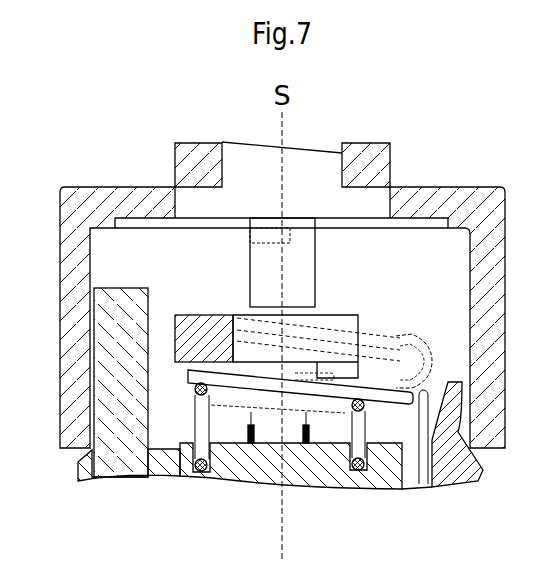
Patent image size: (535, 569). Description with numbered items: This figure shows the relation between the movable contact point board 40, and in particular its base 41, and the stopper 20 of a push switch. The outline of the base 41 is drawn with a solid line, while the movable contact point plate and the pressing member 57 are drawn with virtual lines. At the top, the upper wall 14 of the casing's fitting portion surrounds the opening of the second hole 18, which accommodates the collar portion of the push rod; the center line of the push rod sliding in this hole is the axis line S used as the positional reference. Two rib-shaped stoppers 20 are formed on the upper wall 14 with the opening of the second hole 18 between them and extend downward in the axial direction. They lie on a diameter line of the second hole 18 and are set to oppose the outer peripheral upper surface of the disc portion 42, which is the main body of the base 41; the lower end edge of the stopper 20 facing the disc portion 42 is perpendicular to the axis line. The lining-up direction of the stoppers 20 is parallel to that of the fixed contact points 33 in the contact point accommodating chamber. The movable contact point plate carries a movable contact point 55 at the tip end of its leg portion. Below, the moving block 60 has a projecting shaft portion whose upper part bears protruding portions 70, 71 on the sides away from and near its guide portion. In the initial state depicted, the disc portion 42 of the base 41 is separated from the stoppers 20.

The upper wall 14 is at (433, 197).
The second hole 18 is at (341, 175).
The stopper 20 is at (300, 256).
The fixed contact point 33 is at (250, 240).
The movable contact point board 40 is at (188, 383).
The base 41 is at (410, 338).
The disc portion 42 is at (233, 482).
The movable contact point 55 is at (250, 306).
The pressing member 57 is at (389, 338).
The moving block 60 is at (190, 315).
The protruding portion 70 is at (345, 336).
The protruding portion 71 is at (197, 405).